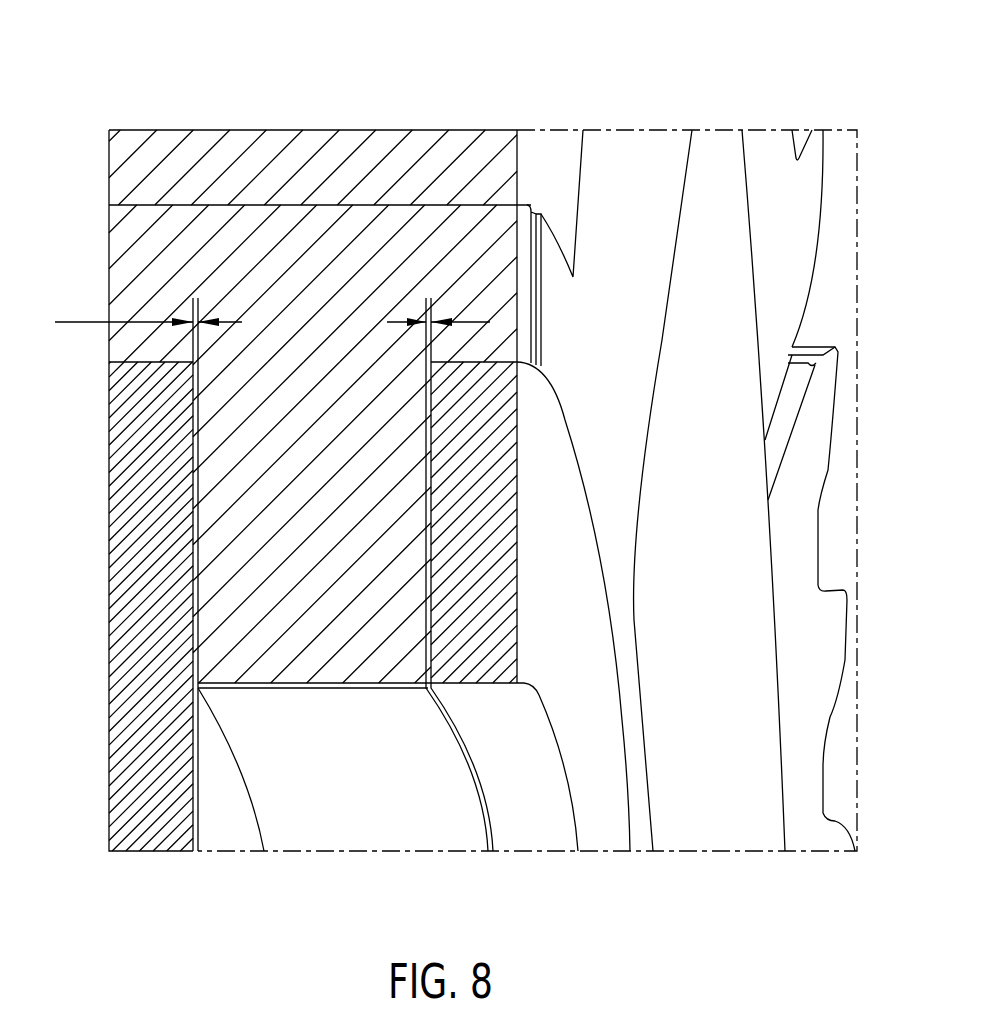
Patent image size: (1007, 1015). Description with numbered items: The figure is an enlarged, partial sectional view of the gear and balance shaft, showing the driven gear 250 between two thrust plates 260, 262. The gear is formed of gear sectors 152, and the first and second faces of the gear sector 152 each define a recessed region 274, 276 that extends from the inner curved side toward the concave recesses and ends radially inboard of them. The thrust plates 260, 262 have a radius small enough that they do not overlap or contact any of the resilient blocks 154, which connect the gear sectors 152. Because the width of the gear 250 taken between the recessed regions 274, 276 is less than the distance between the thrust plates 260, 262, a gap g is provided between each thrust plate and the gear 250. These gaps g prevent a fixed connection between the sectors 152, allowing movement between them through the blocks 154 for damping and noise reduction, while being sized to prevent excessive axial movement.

The gear sector 152 is at (140, 272).
The resilient block 154 is at (412, 155).
The driven gear 250 is at (655, 100).
The thrust plate 260 is at (109, 562).
The thrust plate 262 is at (589, 810).
The recessed region 274 is at (197, 495).
The recessed region 276 is at (424, 531).
The gap g is at (80, 322).